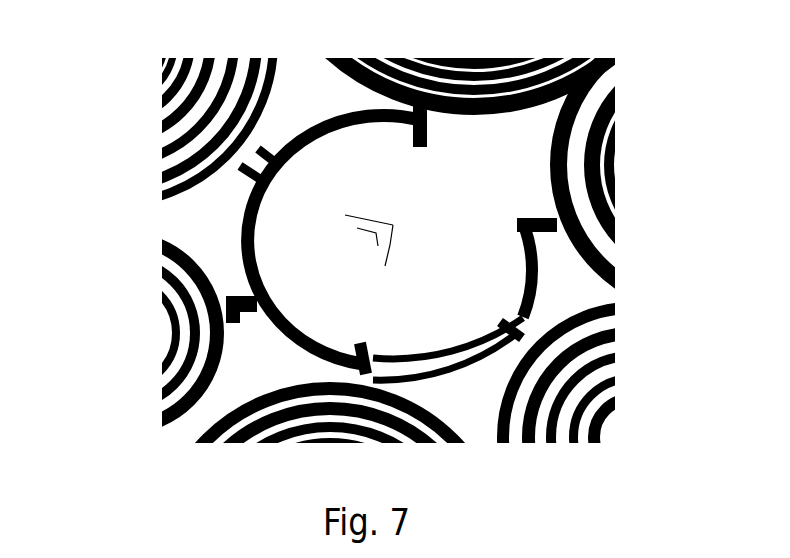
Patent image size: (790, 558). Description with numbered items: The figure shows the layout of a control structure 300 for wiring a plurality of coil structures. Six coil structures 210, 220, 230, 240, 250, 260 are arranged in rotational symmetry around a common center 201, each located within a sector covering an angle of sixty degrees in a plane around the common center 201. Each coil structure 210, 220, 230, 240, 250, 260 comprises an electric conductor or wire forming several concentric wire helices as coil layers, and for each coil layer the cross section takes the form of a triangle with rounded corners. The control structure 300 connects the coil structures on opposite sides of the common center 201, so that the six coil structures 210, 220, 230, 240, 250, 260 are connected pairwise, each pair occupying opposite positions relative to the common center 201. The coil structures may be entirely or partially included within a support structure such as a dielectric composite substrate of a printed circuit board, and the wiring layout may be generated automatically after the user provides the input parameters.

The common center 201 is at (393, 225).
The coil structure 210 is at (513, 58).
The coil structure 220 is at (612, 250).
The coil structure 230 is at (615, 343).
The coil structure 240 is at (398, 443).
The coil structure 250 is at (163, 400).
The coil structure 260 is at (163, 153).
The control structure 300 is at (327, 114).